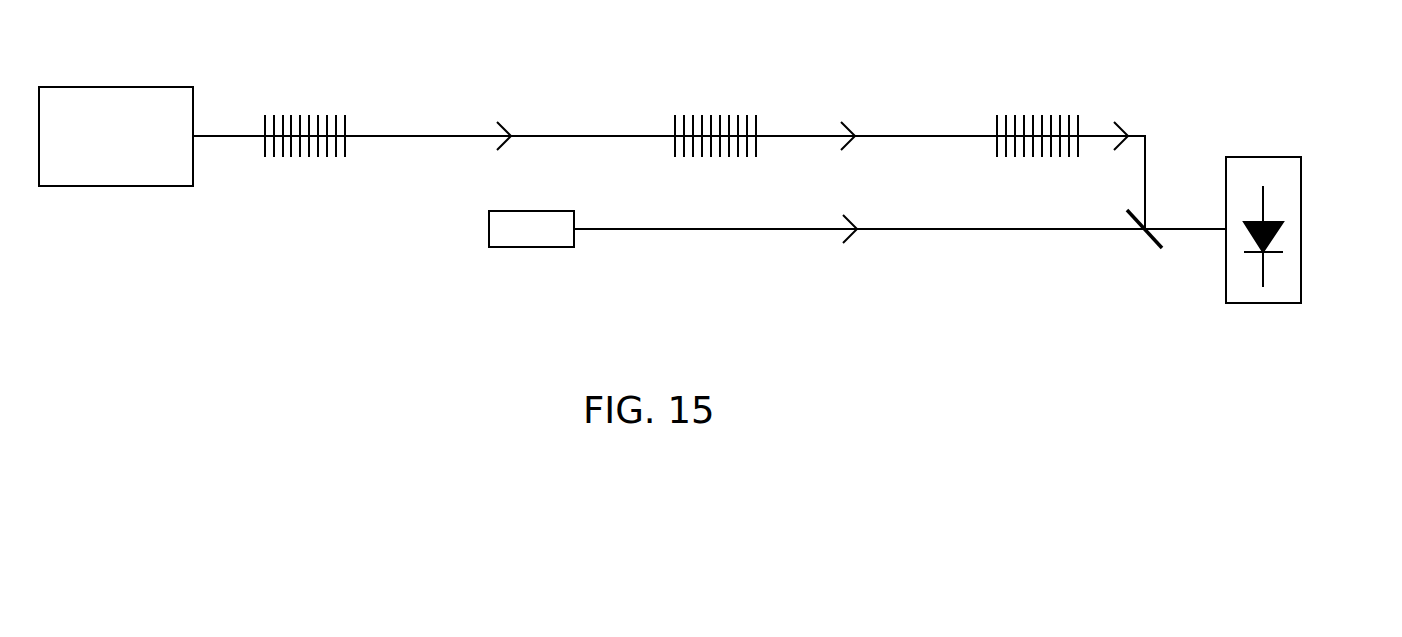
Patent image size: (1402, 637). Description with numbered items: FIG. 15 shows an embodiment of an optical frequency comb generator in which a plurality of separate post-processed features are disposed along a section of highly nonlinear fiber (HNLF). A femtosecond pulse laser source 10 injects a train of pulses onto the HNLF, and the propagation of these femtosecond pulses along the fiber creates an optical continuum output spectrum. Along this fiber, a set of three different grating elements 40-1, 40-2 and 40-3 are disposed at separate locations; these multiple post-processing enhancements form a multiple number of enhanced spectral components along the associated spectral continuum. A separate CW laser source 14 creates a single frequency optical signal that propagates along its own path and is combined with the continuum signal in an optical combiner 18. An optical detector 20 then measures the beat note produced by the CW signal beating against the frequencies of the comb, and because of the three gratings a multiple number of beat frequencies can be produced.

The femtosecond pulse laser source 10 is at (117, 86).
The grating element 40-1 is at (305, 115).
The grating element 40-2 is at (715, 115).
The grating element 40-3 is at (1038, 115).
The CW laser source 14 is at (528, 242).
The optical combiner 18 is at (1150, 242).
The optical detector 20 is at (1263, 157).